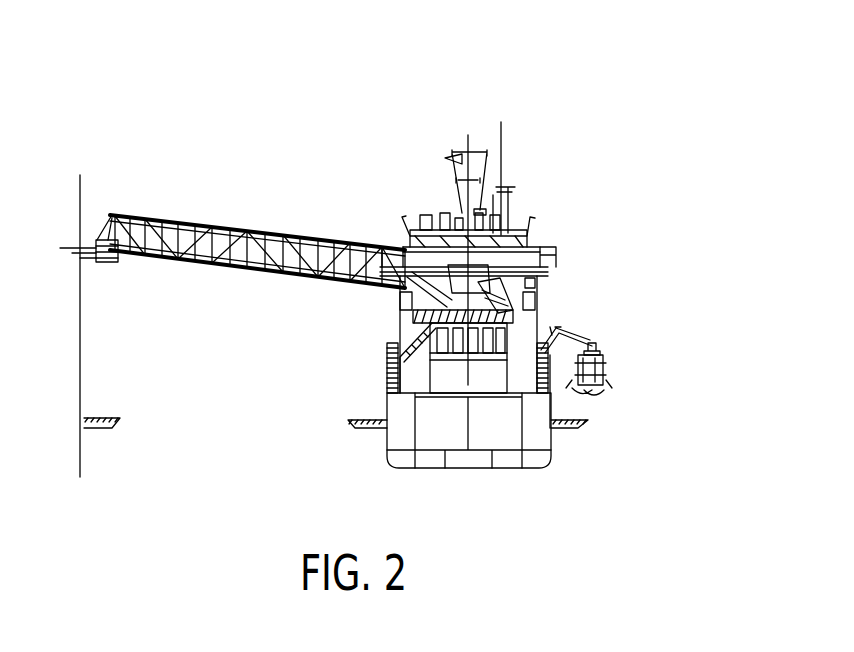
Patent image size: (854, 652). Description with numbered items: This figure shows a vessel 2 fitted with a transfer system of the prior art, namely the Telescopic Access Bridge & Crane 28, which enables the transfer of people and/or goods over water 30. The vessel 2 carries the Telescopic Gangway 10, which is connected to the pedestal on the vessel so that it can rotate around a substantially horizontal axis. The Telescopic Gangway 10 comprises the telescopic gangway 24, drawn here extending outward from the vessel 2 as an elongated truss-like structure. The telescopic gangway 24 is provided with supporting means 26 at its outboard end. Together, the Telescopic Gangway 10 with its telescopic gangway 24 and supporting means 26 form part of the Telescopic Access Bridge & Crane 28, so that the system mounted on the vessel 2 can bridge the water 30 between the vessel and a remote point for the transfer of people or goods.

The vessel 2 is at (610, 204).
The Telescopic Gangway (TGW) 10 is at (262, 176).
The telescopic gangway 24 is at (207, 190).
The supporting means 26 is at (90, 200).
The Telescopic Access Bridge & Crane (TABC) 28 is at (395, 124).
The water 30 is at (354, 392).